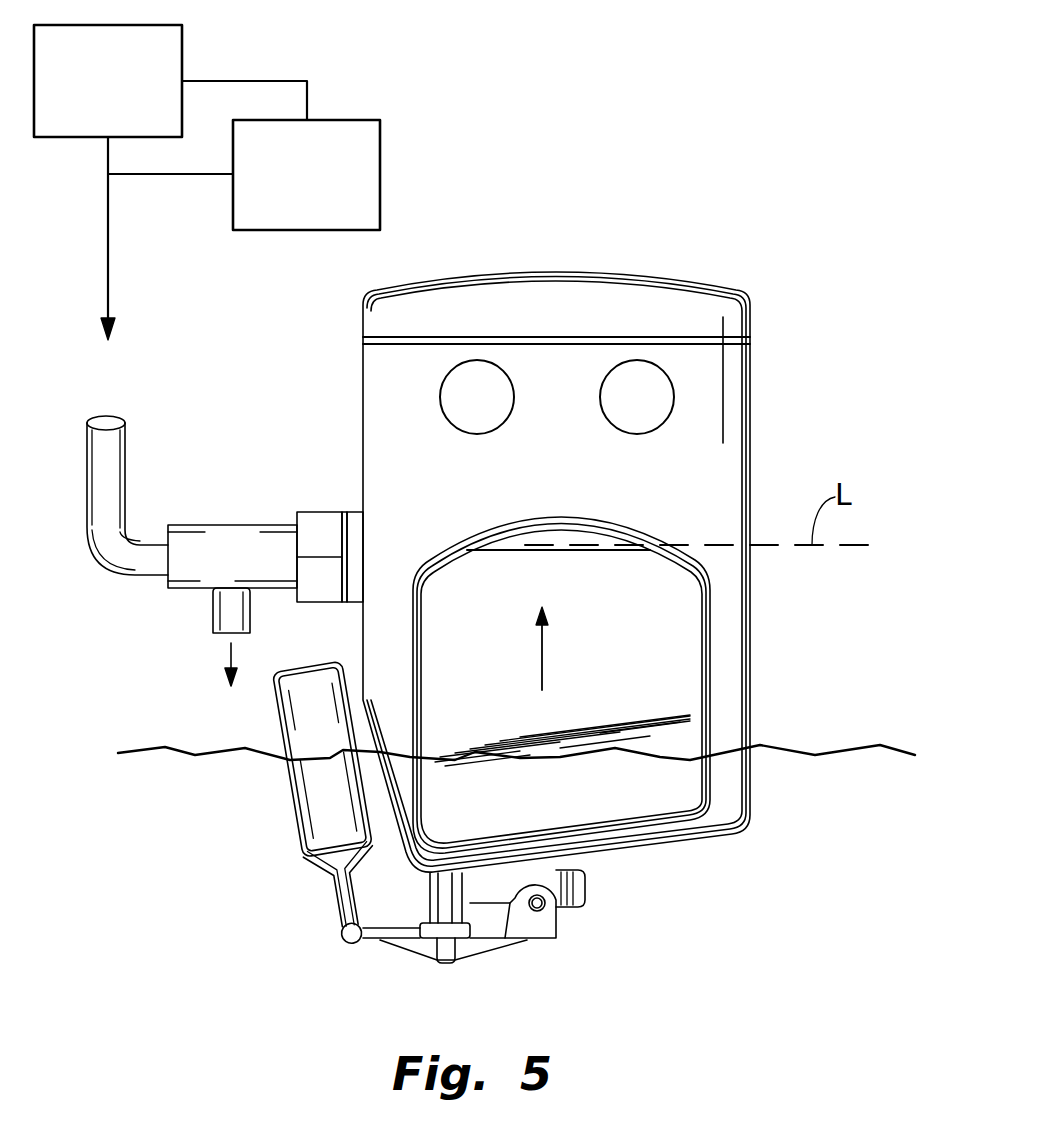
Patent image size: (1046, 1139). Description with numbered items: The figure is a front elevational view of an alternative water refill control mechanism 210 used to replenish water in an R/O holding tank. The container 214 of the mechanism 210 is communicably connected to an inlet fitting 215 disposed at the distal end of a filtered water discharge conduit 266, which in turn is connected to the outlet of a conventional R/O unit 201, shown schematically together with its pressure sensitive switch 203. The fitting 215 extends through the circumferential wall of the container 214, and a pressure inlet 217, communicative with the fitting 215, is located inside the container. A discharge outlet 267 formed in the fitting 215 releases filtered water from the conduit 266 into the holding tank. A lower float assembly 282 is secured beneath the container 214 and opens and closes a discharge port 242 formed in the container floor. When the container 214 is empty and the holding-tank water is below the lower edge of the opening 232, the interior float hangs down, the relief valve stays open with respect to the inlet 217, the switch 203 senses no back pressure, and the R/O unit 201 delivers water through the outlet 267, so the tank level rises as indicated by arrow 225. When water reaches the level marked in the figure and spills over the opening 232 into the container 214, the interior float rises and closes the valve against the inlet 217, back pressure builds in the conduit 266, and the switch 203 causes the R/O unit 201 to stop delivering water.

The R/O unit 201 is at (182, 43).
The pressure sensitive switch 203 is at (380, 147).
The water refill control mechanism 210 is at (318, 392).
The container 214 is at (618, 272).
The inlet fitting 215 is at (240, 525).
The pressure inlet 217 is at (356, 545).
The arrow 225 is at (542, 655).
The opening 232 is at (573, 540).
The discharge port 242 is at (430, 898).
The filtered water discharge conduit 266 is at (107, 563).
The discharge outlet 267 is at (212, 610).
The lower float assembly 282 is at (277, 718).